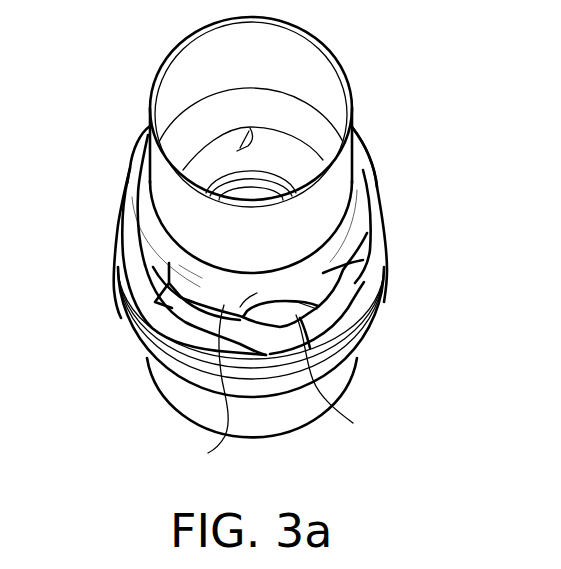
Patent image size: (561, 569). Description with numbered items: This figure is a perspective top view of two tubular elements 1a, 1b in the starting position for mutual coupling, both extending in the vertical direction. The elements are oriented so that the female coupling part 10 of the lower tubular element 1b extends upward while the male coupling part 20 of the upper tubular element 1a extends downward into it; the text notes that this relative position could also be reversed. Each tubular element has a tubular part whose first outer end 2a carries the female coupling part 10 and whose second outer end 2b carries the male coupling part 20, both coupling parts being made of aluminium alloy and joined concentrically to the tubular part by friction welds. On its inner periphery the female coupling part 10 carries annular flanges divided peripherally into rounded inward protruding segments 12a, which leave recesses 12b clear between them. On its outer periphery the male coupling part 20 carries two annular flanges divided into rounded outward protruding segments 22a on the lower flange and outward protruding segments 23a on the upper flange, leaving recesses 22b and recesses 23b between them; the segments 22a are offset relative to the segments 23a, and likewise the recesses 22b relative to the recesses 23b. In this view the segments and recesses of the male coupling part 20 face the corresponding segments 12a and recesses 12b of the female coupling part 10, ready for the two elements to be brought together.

The tubular element 1a is at (161, 57).
The tubular element 1b is at (166, 399).
The first outer end 2a is at (160, 218).
The second outer end 2b is at (347, 367).
The female coupling part 10 is at (389, 294).
The inward protruding segments 12a is at (193, 338).
The recesses 12b is at (166, 278).
The male coupling part 20 is at (123, 155).
The outward protruding segments 22a is at (348, 375).
The recesses 22b is at (202, 392).
The outward protruding segments 23a is at (350, 233).
The recesses 23b is at (292, 292).